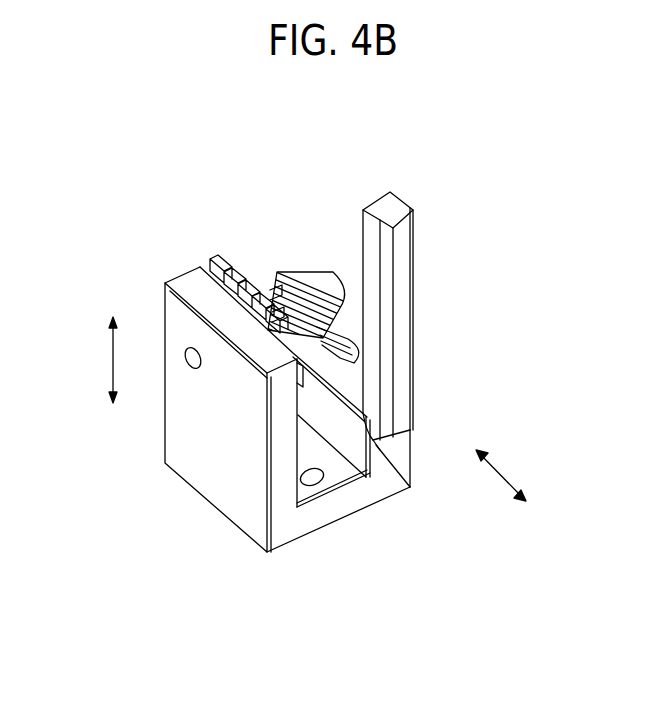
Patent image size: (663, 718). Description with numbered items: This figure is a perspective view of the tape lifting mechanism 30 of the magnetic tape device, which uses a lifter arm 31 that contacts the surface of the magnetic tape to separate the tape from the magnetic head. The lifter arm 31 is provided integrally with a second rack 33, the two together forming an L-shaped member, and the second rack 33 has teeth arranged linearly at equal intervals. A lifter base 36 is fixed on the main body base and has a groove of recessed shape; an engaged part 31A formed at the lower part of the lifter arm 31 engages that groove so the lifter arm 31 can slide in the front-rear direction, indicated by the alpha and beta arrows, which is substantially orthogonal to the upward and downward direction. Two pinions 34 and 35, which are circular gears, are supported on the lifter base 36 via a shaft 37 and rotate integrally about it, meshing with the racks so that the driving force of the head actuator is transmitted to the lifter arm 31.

The tape lifting mechanism 30 is at (313, 210).
The lifter arm 31 is at (405, 281).
The engaged part 31A is at (380, 450).
The second rack 33 is at (347, 343).
The pinion 34 is at (230, 265).
The pinion 35 is at (313, 280).
The lifter base 36 is at (210, 493).
The shaft 37 is at (185, 356).